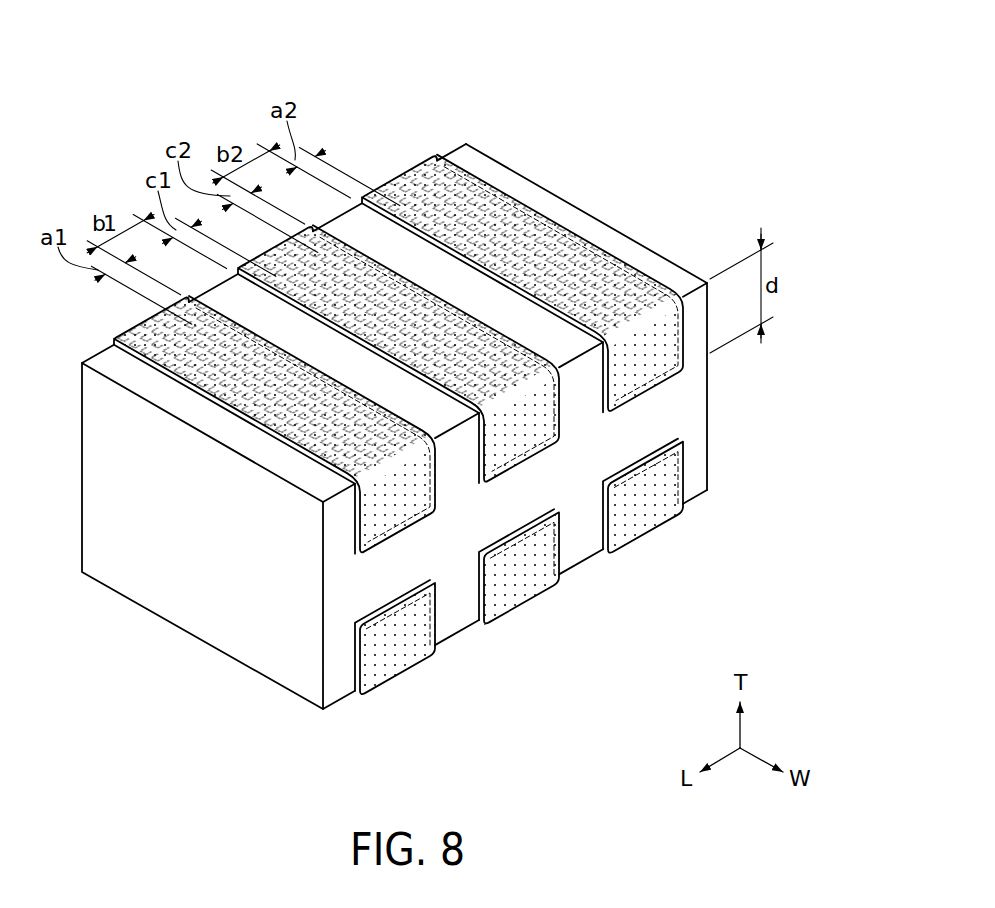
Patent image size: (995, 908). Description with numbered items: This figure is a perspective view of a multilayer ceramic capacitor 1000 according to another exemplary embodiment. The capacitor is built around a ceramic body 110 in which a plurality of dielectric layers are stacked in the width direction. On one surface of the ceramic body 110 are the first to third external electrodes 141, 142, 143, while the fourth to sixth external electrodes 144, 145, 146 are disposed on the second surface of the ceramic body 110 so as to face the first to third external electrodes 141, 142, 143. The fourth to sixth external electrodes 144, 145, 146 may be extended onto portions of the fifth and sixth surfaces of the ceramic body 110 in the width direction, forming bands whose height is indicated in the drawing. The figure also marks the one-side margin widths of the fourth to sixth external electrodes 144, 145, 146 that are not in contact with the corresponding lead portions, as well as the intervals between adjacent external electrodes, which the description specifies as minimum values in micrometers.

The multilayer ceramic capacitor 1000 is at (205, 82).
The ceramic body 110 is at (556, 198).
The first external electrode 141 is at (400, 662).
The second external electrode 142 is at (650, 520).
The third external electrode 143 is at (523, 590).
The fourth external electrode 144 is at (397, 505).
The fifth external electrode 145 is at (636, 378).
The sixth external electrode 146 is at (520, 437).